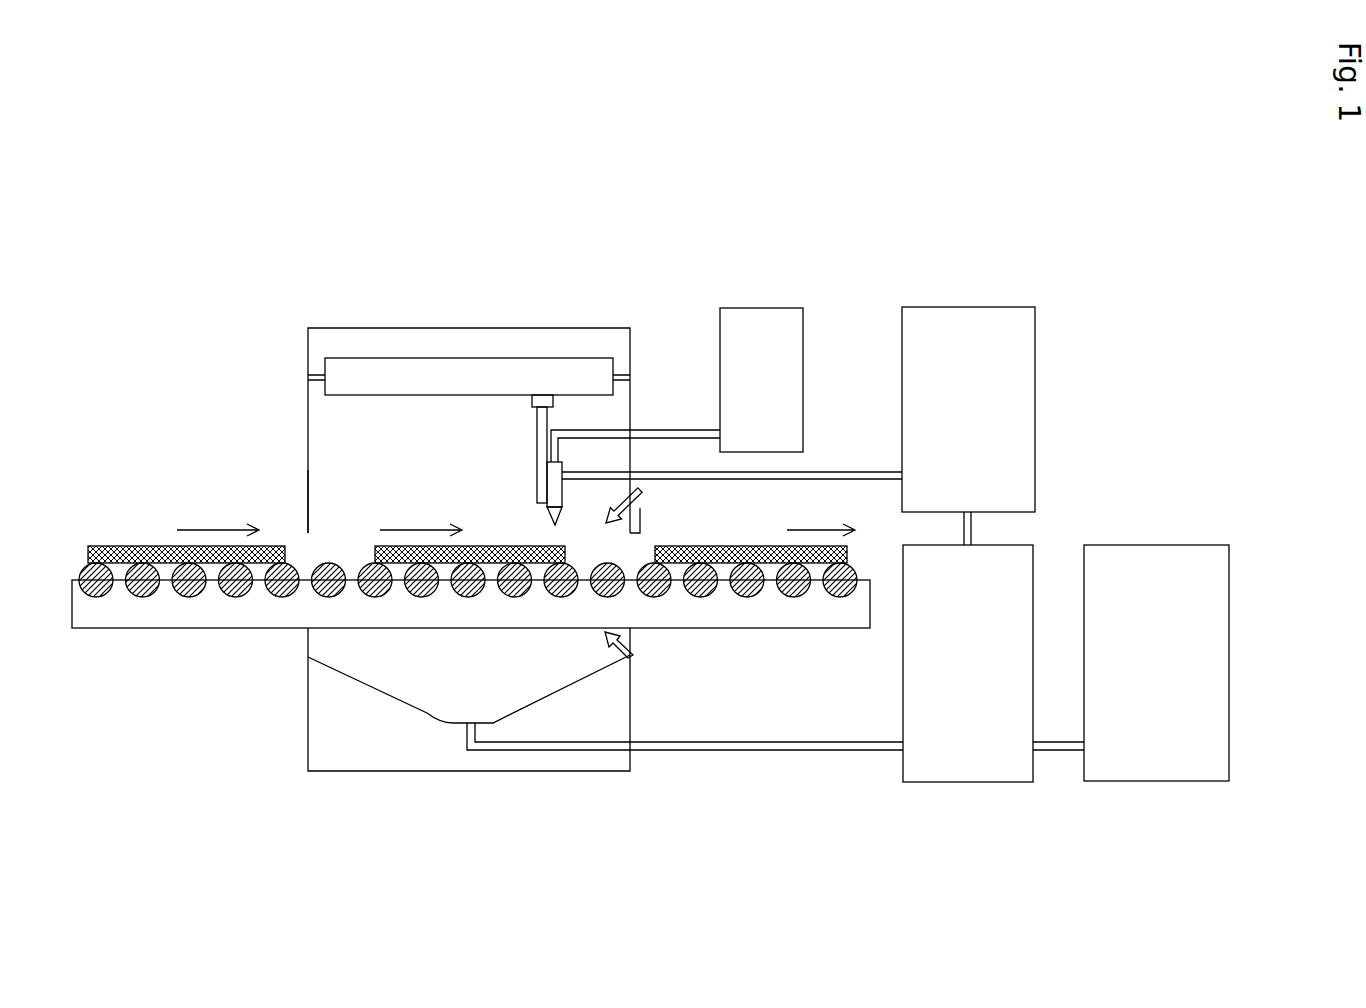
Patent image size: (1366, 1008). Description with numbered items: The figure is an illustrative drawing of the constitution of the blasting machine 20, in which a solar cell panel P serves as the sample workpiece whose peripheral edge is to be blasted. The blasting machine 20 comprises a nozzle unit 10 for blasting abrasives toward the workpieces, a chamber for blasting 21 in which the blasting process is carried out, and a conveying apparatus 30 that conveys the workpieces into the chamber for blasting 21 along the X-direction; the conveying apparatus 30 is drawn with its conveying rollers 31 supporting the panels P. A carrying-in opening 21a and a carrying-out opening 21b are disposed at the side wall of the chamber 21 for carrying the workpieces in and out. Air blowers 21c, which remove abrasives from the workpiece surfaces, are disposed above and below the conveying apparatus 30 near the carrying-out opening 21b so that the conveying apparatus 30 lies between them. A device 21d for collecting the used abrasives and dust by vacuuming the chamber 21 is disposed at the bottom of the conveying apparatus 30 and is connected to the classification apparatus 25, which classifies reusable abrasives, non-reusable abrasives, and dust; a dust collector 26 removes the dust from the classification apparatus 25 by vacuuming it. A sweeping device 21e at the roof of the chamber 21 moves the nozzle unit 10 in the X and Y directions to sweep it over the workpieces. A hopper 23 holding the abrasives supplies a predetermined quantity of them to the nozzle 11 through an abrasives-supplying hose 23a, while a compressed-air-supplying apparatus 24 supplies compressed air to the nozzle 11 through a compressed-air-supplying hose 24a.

The blasting machine 20 is at (904, 181).
The chamber for blasting 21 is at (430, 328).
The carrying-in opening 21a is at (306, 530).
The carrying-out opening 21b is at (641, 510).
The air blowers 21c is at (640, 480).
The device for collecting used abrasives and dust 21d is at (427, 713).
The sweeping device 21e is at (355, 375).
The nozzle unit 10 is at (537, 453).
The nozzle 11 is at (563, 486).
The hopper for holding the abrasives 23 is at (964, 307).
The abrasives-supplying hose 23a is at (848, 470).
The compressed-air-supplying apparatus 24 is at (760, 308).
The compressed-air-supplying hose 24a is at (705, 430).
The classification apparatus 25 is at (962, 782).
The dust collector 26 is at (1152, 782).
The conveying apparatus 30 is at (232, 607).
The conveying roller 31 is at (143, 597).
The solar cell panel P is at (128, 546).